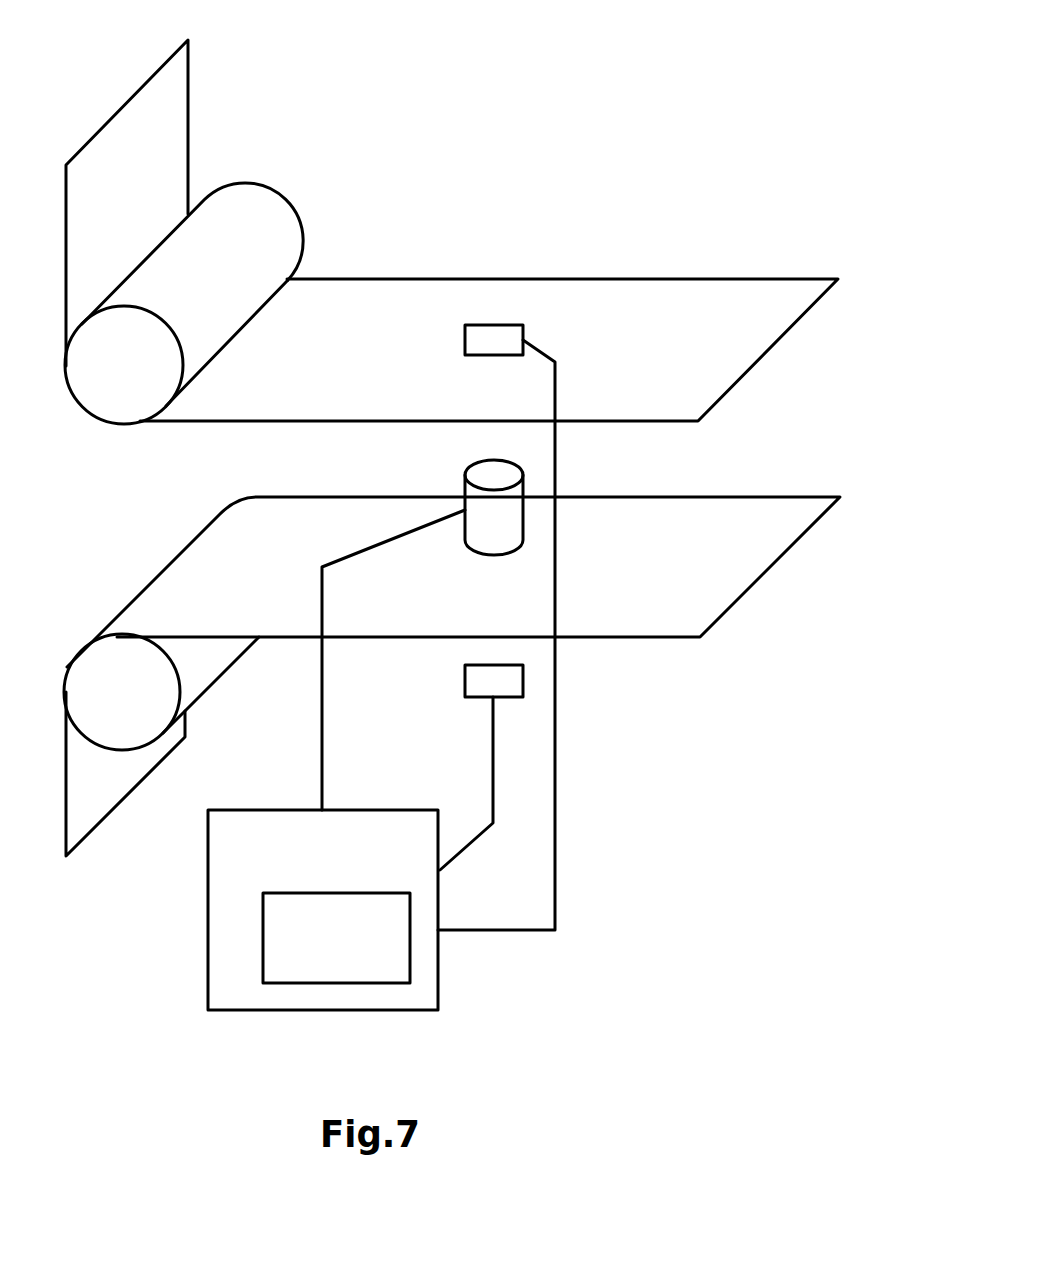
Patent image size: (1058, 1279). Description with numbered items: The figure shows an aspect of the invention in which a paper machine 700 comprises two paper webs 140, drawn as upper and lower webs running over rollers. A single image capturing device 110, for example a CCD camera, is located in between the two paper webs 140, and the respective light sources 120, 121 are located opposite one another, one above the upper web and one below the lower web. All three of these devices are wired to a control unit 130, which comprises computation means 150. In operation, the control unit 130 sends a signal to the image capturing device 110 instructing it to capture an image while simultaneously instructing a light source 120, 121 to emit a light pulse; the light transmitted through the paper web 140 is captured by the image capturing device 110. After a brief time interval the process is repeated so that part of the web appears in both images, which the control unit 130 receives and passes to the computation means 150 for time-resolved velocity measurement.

The paper machine 700 is at (243, 448).
The paper web 140 is at (703, 293).
The light source 121 is at (495, 323).
The image capturing device 110 is at (522, 502).
The light source 120 is at (523, 680).
The control unit 130 is at (205, 928).
The computation means 150 is at (336, 938).